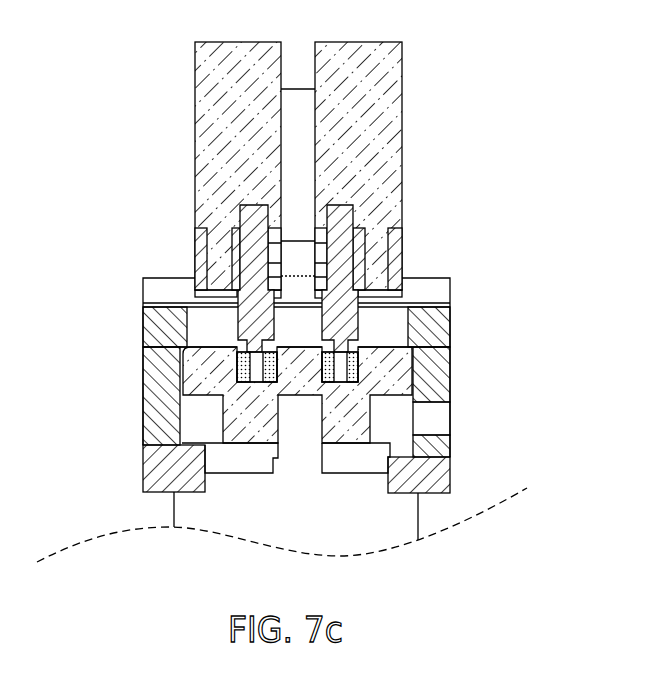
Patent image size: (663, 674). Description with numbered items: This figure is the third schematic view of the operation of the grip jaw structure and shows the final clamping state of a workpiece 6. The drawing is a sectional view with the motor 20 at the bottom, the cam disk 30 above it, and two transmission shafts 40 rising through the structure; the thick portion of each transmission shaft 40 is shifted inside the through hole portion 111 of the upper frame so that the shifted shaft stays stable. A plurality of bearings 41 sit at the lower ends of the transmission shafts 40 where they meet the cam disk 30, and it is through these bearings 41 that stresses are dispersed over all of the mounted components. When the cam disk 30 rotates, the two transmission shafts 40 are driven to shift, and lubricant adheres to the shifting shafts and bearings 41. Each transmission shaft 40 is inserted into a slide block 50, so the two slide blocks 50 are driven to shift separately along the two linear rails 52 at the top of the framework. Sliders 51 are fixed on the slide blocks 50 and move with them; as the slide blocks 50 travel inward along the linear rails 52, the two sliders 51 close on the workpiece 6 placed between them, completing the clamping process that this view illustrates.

The workpiece 6 is at (300, 89).
The slider 51 is at (205, 130).
The transmission shaft 40 is at (255, 205).
The slide block 50 is at (397, 247).
The linear rail 52 is at (443, 283).
The through hole portion 111 is at (192, 323).
The bearing 41 is at (235, 355).
The cam disk 30 is at (400, 378).
The motor 20 is at (175, 507).